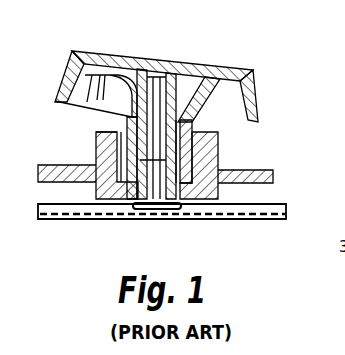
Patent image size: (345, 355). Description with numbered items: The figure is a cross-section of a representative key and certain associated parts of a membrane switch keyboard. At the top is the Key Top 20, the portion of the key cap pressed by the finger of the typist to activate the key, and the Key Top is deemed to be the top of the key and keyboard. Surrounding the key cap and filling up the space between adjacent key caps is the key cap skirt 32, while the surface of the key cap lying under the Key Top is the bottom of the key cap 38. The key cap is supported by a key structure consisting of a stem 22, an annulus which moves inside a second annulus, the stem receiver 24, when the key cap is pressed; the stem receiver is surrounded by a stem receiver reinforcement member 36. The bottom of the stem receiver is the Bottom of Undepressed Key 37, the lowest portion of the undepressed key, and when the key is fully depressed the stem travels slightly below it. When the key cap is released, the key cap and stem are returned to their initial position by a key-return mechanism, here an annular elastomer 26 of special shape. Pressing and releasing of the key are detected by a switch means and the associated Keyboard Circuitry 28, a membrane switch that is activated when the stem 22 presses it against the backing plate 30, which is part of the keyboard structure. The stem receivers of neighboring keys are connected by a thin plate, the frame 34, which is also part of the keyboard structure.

The Key Top 20 is at (179, 78).
The key cap skirt 32 is at (257, 83).
The bottom of the key cap 38 is at (83, 105).
The stem receiver reinforcement member 36 is at (100, 145).
The annular elastomer 26 is at (194, 120).
The frame 34 is at (263, 168).
The stem 22 is at (173, 215).
The stem receiver 24 is at (144, 210).
The Keyboard Circuitry 28 is at (277, 205).
The Bottom of Undepressed Key 37 is at (222, 221).
The backing plate 30 is at (273, 220).